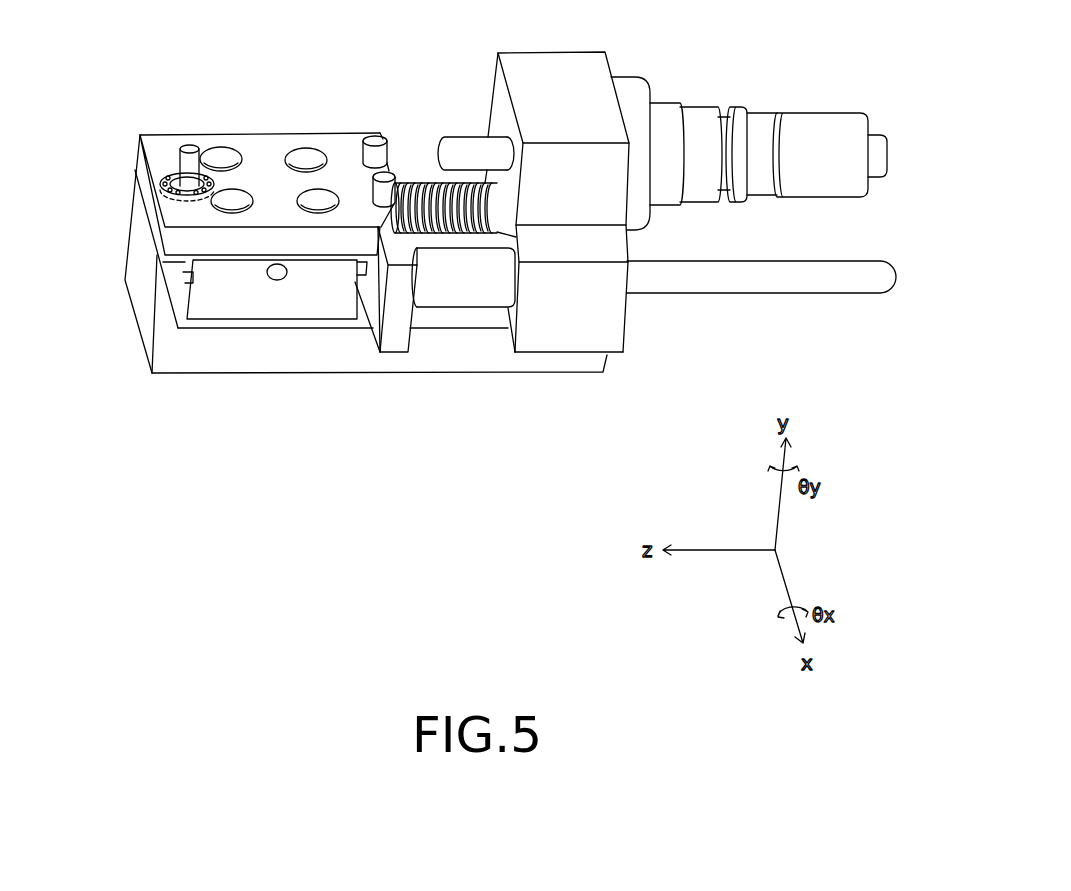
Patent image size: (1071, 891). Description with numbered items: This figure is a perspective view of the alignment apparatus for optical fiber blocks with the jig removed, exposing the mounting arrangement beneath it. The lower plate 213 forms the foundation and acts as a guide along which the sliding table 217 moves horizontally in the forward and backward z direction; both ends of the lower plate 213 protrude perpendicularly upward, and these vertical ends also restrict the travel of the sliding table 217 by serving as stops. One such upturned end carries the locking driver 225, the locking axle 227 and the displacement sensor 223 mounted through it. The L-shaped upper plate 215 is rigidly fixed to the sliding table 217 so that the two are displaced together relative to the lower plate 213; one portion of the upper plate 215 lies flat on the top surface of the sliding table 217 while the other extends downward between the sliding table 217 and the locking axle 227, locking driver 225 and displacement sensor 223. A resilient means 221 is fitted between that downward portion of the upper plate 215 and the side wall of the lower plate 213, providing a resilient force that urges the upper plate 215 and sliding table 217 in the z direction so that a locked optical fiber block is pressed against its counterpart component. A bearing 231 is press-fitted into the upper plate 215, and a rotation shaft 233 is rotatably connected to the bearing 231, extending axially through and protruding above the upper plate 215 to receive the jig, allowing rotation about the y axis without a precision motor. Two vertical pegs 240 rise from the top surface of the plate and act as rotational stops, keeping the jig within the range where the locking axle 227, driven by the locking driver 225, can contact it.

The lower plate 213 is at (540, 367).
The upper plate 215 is at (395, 338).
The sliding table 217 is at (230, 300).
The resilient means 221 is at (432, 187).
The displacement sensor 223 is at (462, 288).
The locking driver 225 is at (813, 128).
The locking axle 227 is at (468, 147).
The bearing 231 is at (163, 180).
The rotation shaft 233 is at (192, 147).
The vertical pegs 240 is at (373, 183).